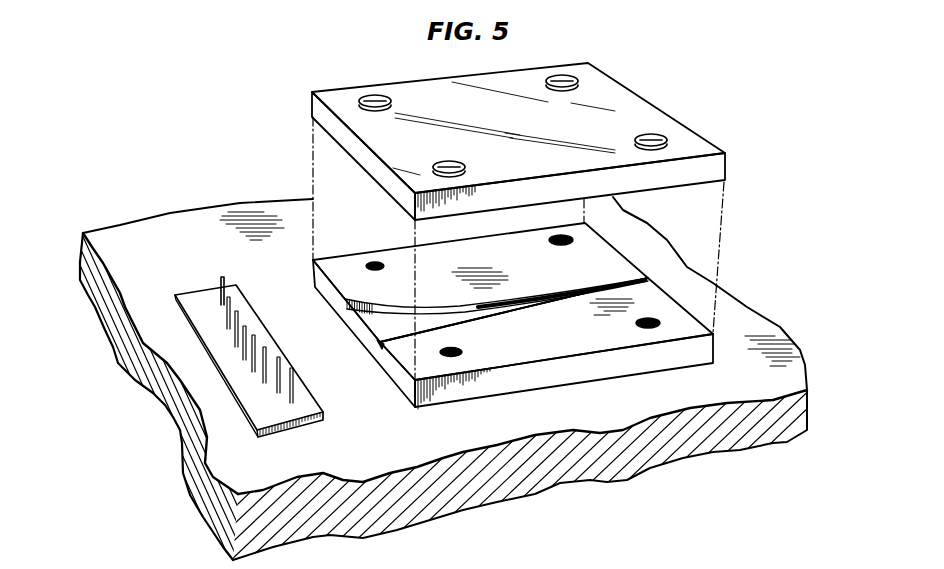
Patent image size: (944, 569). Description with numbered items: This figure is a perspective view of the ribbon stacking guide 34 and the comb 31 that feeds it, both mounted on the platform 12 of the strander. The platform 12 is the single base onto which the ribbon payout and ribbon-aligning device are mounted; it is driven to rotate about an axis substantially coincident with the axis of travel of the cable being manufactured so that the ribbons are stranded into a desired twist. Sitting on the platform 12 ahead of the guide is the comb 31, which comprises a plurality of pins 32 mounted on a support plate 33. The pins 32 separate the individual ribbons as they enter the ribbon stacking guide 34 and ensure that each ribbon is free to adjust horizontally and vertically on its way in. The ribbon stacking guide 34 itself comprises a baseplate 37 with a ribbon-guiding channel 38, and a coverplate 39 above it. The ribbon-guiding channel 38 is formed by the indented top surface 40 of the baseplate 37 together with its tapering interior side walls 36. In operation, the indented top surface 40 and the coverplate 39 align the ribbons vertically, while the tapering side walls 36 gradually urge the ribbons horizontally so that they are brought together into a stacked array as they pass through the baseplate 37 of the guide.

The platform 12 is at (660, 453).
The comb 31 is at (252, 351).
The pins 32 is at (292, 371).
The support plate 33 is at (296, 425).
The ribbon stacking guide 34 is at (510, 321).
The tapering interior side walls 36 is at (347, 314).
The baseplate 37 is at (645, 358).
The ribbon-guiding channel 38 is at (635, 278).
The coverplate 39 is at (647, 100).
The indented top surface 40 is at (373, 318).